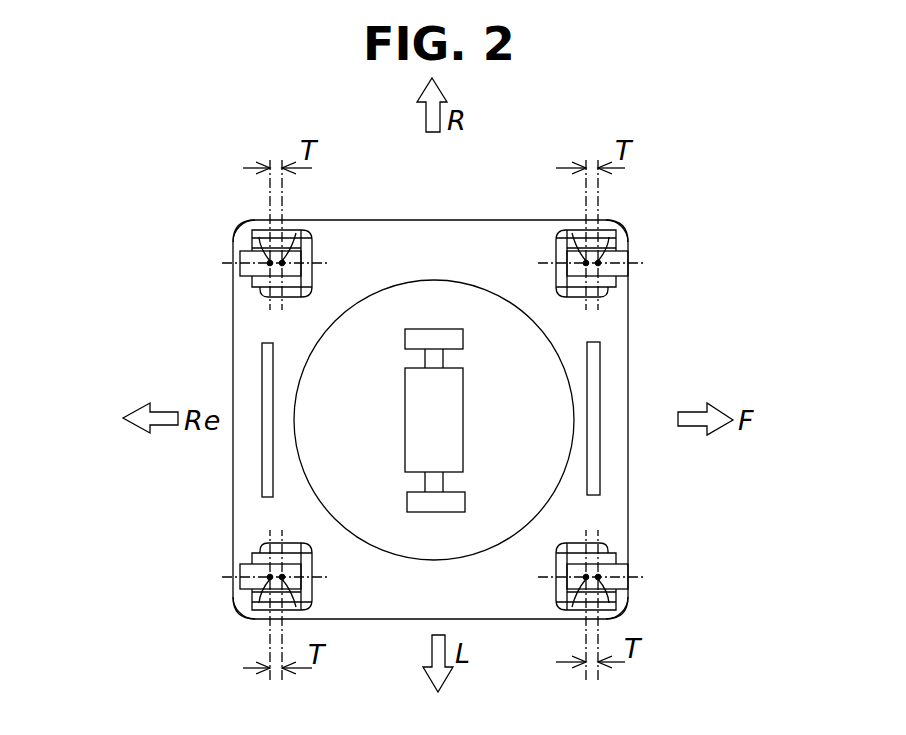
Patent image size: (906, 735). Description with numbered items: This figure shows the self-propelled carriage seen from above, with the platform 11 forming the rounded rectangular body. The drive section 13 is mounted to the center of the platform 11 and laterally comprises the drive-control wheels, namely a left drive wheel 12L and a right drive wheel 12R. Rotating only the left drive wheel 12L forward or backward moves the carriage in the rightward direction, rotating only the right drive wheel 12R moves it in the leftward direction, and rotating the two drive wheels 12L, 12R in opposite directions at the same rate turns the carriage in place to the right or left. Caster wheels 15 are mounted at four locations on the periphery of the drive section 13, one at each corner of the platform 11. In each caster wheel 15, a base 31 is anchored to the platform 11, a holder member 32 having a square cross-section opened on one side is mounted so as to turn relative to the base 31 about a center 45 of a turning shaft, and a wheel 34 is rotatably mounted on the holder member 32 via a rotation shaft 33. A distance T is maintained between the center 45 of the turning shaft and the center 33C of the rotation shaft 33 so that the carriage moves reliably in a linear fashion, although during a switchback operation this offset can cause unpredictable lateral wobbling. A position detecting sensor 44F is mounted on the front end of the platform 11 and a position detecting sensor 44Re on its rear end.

The platform 11 is at (418, 220).
The right drive wheel 12R is at (453, 329).
The left drive wheel 12L is at (452, 512).
The drive section 13 is at (398, 453).
The caster wheel 15 is at (238, 245).
The base 31 is at (266, 250).
The holder member 32 is at (243, 283).
The rotation shaft 33 is at (262, 248).
The center of the rotation shaft 33C is at (276, 230).
The wheel 34 is at (241, 268).
The position detecting sensor 44Re is at (260, 357).
The position detecting sensor 44F is at (597, 348).
The center of the turning shaft 45 is at (286, 252).